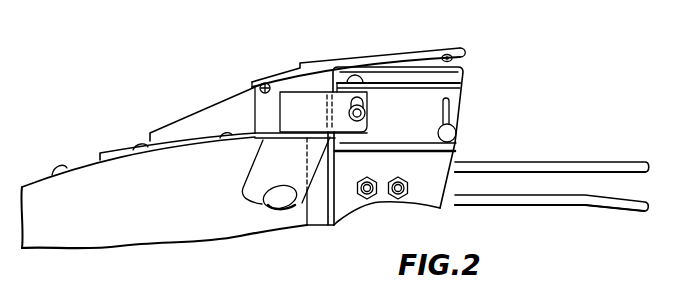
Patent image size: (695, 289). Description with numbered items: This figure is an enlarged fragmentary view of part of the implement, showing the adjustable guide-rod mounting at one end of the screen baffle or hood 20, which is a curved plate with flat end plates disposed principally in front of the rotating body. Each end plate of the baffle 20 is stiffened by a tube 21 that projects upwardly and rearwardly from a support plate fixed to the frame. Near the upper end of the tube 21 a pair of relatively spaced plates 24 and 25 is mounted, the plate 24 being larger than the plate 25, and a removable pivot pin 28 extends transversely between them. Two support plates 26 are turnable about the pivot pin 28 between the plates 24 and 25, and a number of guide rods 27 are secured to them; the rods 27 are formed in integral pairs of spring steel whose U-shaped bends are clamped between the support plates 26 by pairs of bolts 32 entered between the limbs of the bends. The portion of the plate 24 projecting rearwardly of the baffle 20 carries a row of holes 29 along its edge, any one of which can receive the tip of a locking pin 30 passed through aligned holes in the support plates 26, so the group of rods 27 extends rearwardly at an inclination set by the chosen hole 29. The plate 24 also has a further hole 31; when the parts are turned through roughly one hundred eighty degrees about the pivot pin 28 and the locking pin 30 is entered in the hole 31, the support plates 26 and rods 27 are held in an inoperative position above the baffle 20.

The screen baffle or hood 20 is at (75, 178).
The tube 21 is at (262, 158).
The plate 24 is at (436, 54).
The plate 25 is at (291, 104).
The support plate 26 is at (465, 75).
The guide rod 27 is at (535, 200).
The removable pivot pin 28 is at (366, 118).
The hole 29 is at (455, 57).
The locking pin 30 is at (458, 130).
The hole 31 is at (263, 84).
The bolt 32 is at (400, 200).